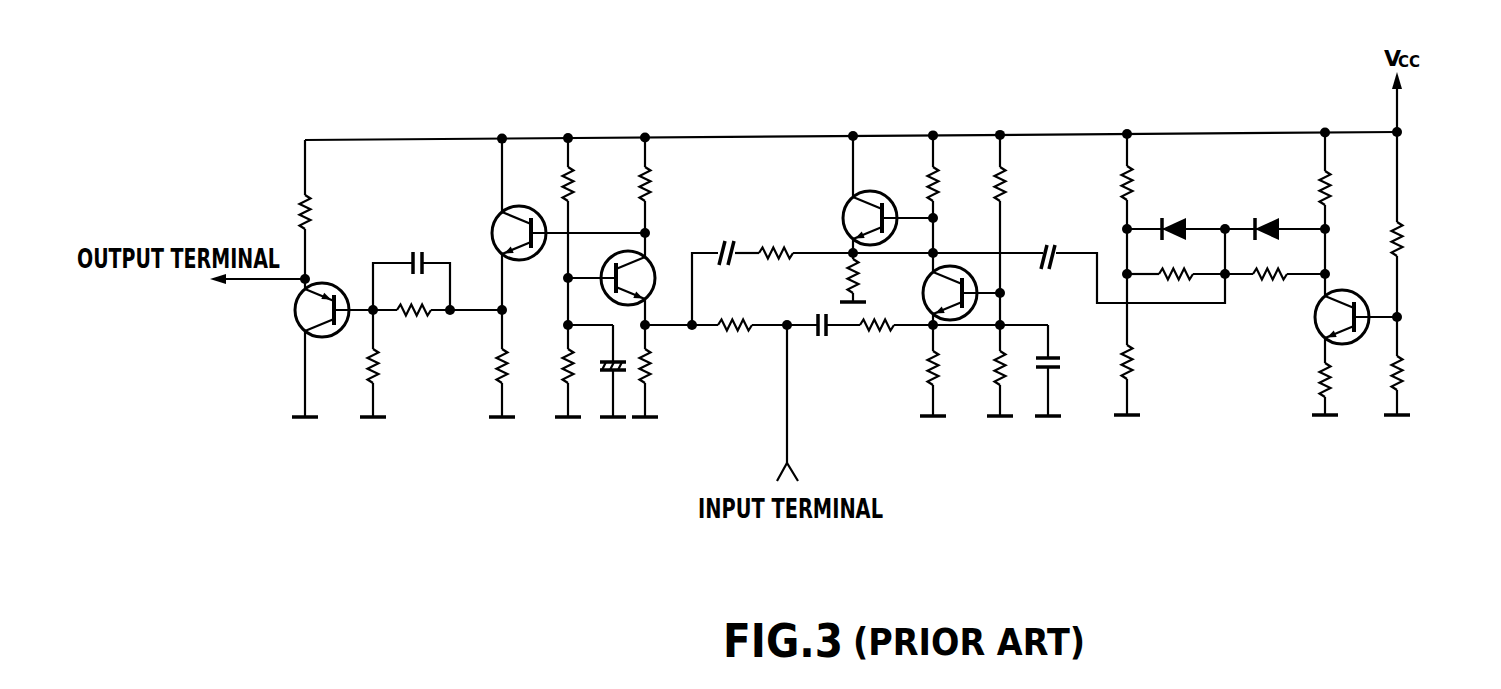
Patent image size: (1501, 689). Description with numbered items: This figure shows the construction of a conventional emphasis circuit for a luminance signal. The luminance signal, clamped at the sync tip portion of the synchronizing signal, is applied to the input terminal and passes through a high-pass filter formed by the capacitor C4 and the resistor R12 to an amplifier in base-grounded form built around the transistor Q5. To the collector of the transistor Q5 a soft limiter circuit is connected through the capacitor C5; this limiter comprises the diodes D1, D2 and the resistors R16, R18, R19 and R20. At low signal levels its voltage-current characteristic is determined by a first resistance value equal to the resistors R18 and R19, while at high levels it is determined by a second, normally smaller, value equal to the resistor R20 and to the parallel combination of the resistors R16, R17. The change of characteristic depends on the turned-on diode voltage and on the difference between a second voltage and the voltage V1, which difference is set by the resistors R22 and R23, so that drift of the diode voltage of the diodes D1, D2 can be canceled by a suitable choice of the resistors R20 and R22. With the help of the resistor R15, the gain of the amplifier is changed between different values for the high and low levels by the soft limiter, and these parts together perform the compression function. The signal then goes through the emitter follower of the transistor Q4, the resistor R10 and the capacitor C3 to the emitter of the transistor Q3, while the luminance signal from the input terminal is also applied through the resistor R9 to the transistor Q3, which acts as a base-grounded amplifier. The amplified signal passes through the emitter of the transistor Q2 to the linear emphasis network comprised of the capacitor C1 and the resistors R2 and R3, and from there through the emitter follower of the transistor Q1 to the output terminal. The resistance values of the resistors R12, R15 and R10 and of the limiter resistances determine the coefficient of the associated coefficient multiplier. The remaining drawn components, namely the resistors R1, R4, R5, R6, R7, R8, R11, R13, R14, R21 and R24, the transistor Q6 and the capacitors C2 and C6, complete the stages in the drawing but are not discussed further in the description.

The resistor R1 is at (300, 206).
The resistor R2 is at (378, 373).
The resistor R3 is at (418, 314).
The resistor R4 is at (498, 372).
The resistor R5 is at (565, 182).
The resistor R6 is at (565, 370).
The resistor R7 is at (642, 182).
The resistor R8 is at (653, 373).
The resistor R9 is at (738, 337).
The resistor R10 is at (783, 262).
The resistor R11 is at (850, 277).
The resistor R12 is at (872, 336).
The resistor R13 is at (929, 373).
The resistor R14 is at (997, 373).
The resistor R15 is at (996, 182).
The resistor R16 is at (1122, 186).
The resistor R17 is at (1132, 371).
The resistor R18 is at (1173, 283).
The resistor R19 is at (1277, 283).
The resistor R20 is at (1318, 186).
The resistor R21 is at (1322, 380).
The resistor R22 is at (1403, 241).
The resistor R23 is at (1405, 373).
The resistor R24 is at (926, 182).
The transistor Q1 is at (296, 307).
The transistor Q2 is at (497, 215).
The transistor Q3 is at (651, 259).
The transistor Q4 is at (848, 205).
The transistor Q5 is at (925, 286).
The transistor Q6 is at (1321, 334).
The capacitor C1 is at (418, 252).
The capacitor C2 is at (604, 370).
The capacitor C3 is at (731, 245).
The capacitor C4 is at (823, 338).
The capacitor C5 is at (1049, 244).
The capacitor C6 is at (1062, 362).
The diode D1 is at (1174, 216).
The diode D2 is at (1268, 218).
The limiter bias voltage V1 is at (1117, 228).